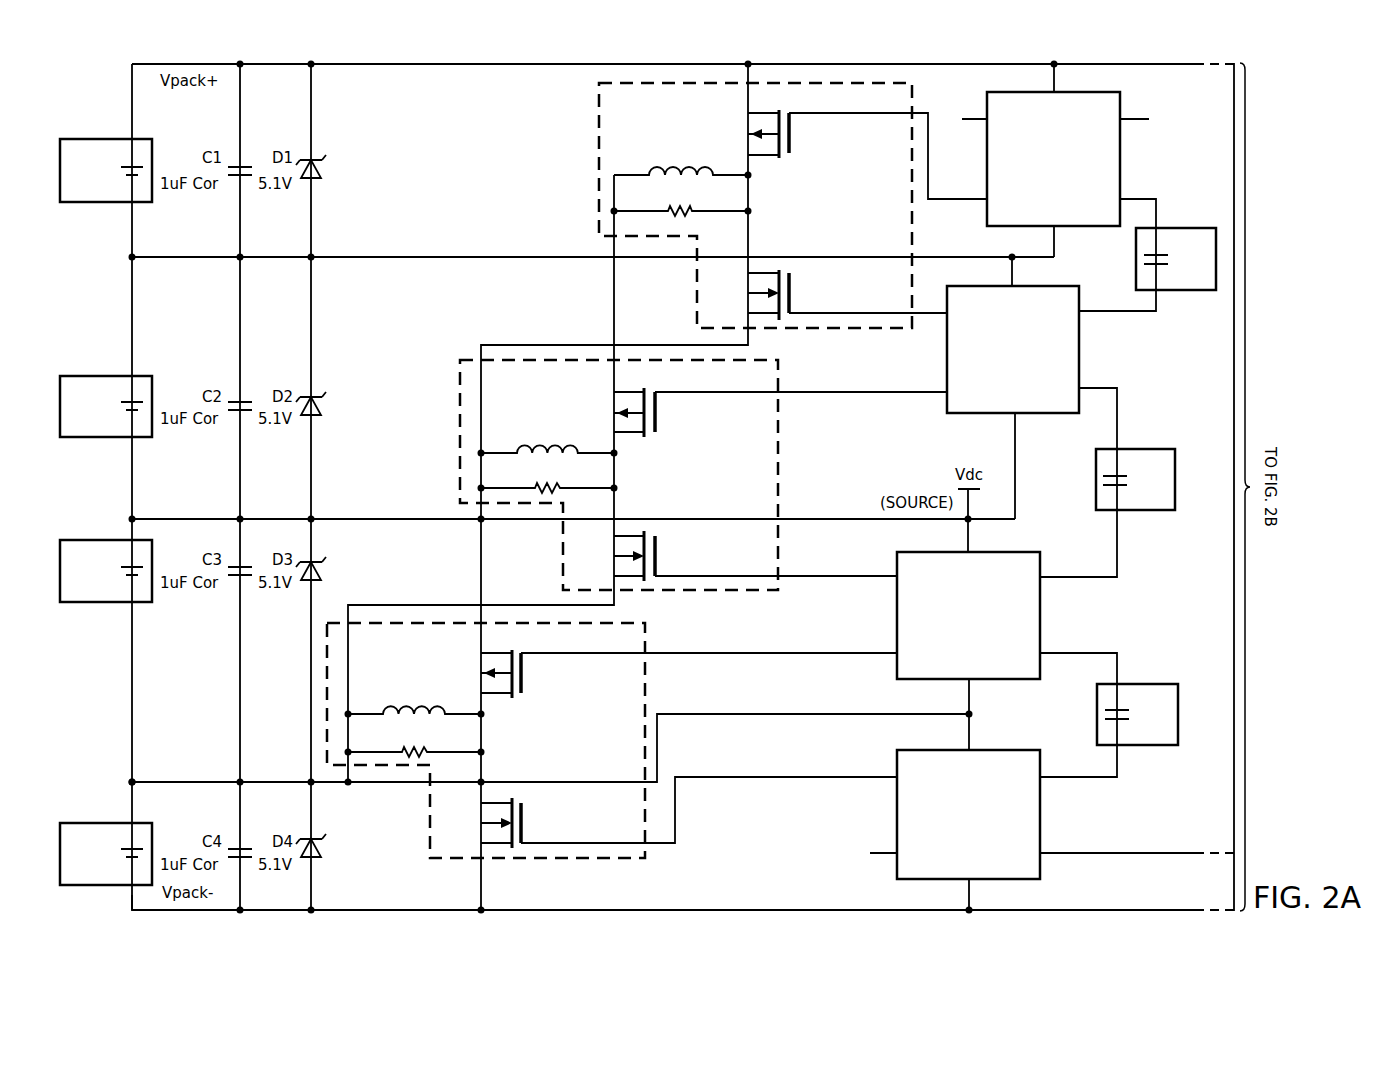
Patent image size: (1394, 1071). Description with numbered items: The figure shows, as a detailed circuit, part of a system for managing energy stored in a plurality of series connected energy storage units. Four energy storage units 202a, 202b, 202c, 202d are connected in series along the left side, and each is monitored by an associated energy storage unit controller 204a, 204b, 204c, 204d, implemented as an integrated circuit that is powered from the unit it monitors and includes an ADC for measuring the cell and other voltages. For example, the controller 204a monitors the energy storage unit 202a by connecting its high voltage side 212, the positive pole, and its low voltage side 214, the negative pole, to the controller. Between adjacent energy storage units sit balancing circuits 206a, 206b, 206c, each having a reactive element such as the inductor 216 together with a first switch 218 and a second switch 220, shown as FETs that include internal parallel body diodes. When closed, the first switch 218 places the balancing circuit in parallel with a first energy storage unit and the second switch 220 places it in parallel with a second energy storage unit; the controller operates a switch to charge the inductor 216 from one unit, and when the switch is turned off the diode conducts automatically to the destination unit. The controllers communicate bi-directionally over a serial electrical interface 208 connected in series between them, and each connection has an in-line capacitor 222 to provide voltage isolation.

The energy storage unit 202a is at (101, 823).
The energy storage unit 202b is at (101, 602).
The energy storage unit 202c is at (101, 376).
The energy storage unit 202d is at (101, 139).
The energy storage unit controller 204a is at (1040, 862).
The energy storage unit controller 204b is at (1040, 616).
The energy storage unit controller 204c is at (1082, 341).
The energy storage unit controller 204d is at (1120, 161).
The balancing circuit 206a is at (612, 741).
The balancing circuit 206b is at (454, 418).
The balancing circuit 206c is at (594, 135).
The serial electrical interface 208 is at (1156, 296).
The high voltage side 212 is at (134, 790).
The low voltage side 214 is at (131, 894).
The inductor 216 is at (372, 702).
The first switch 218 is at (526, 690).
The second switch 220 is at (528, 812).
The in-line capacitor 222 is at (1188, 228).